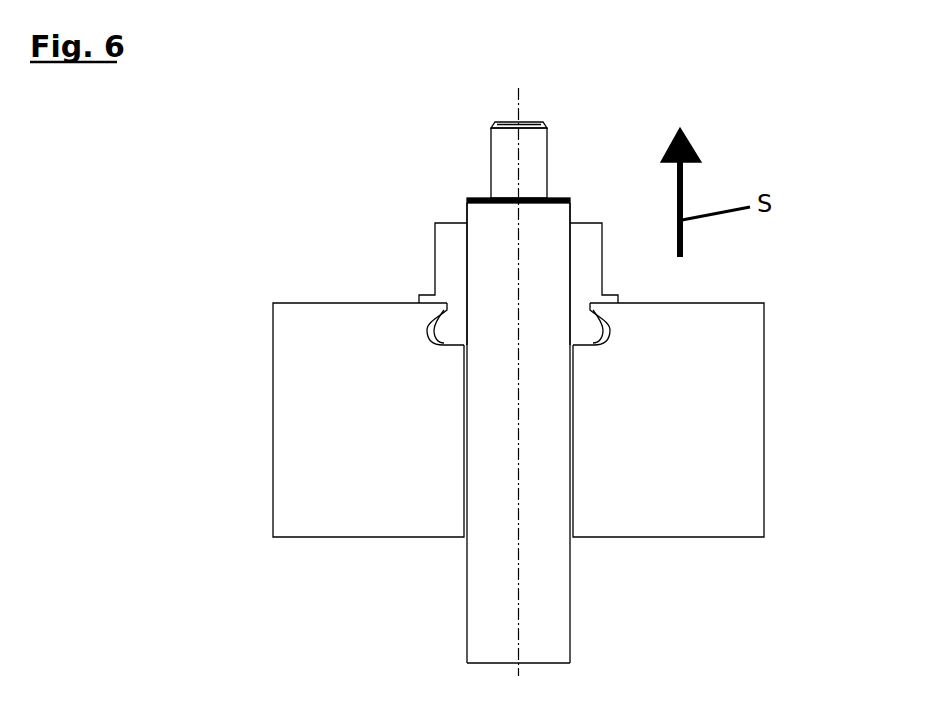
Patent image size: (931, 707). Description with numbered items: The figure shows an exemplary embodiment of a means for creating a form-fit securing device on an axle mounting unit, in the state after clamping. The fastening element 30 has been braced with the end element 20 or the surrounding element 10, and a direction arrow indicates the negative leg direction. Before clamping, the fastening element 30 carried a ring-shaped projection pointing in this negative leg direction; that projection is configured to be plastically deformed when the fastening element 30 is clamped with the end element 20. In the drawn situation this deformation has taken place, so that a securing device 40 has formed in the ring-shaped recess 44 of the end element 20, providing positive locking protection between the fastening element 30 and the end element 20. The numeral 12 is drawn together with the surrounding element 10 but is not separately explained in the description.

The surrounding element 10 is at (594, 382).
The shaft of the fastening element 12 is at (552, 552).
The end element 20 is at (700, 404).
The fastening element 30 is at (448, 247).
The securing device 40 is at (405, 262).
The ring-shaped recess 44 is at (432, 337).